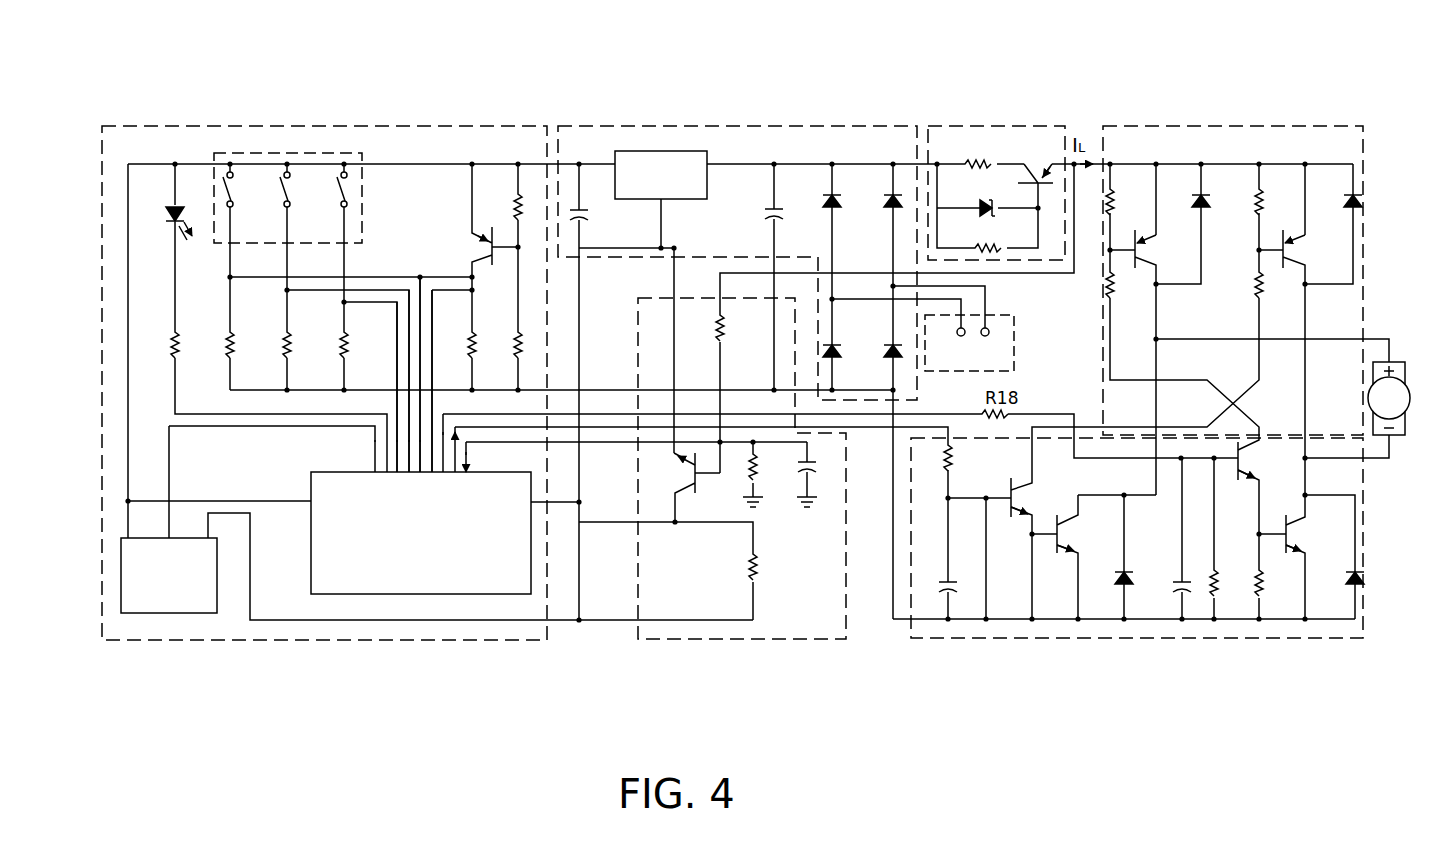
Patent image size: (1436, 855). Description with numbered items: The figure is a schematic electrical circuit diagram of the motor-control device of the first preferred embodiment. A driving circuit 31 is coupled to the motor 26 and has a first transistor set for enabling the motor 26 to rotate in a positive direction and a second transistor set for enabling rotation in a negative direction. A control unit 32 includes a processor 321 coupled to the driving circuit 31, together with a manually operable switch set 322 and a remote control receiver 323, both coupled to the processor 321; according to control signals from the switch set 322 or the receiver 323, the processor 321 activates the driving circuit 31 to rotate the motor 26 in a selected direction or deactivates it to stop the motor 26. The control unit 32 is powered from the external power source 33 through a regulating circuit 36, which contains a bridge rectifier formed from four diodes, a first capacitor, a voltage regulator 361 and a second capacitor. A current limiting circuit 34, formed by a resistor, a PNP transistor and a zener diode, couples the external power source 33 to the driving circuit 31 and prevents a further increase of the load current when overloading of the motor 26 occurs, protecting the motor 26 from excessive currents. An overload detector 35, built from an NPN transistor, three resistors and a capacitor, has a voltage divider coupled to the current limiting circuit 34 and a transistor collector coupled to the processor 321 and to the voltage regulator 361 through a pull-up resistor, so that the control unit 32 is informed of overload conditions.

The motor 26 is at (1406, 368).
The driving circuit 31 is at (1200, 126).
The control unit 32 is at (352, 126).
The processor 321 is at (400, 594).
The manually operable switch set 322 is at (255, 153).
The remote control receiver 323 is at (173, 613).
The external power source 33 is at (1014, 356).
The current limiting circuit 34 is at (975, 126).
The overload detector 35 is at (707, 640).
The regulating circuit 36 is at (760, 126).
The voltage regulator 361 is at (672, 151).